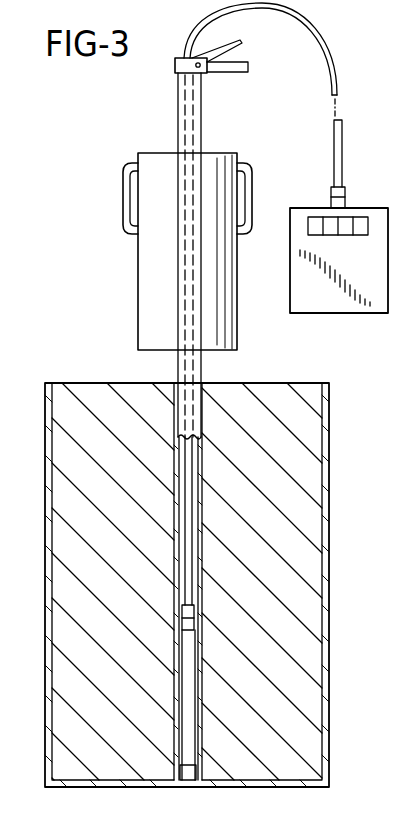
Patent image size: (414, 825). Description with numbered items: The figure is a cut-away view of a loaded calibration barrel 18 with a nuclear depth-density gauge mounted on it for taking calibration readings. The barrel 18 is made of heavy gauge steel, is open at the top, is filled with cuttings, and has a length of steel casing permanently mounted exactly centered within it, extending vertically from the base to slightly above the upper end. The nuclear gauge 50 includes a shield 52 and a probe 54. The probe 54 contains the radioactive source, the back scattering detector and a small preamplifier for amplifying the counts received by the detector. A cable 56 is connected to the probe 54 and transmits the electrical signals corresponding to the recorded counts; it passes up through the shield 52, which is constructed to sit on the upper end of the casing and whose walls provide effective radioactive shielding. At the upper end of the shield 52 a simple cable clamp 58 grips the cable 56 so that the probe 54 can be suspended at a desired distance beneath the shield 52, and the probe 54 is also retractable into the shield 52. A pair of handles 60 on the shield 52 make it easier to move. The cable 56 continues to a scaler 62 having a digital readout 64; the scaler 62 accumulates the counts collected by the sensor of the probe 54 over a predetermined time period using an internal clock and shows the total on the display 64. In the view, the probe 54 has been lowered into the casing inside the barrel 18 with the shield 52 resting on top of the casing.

The calibration barrel 18 is at (328, 572).
The nuclear gauge 50 is at (128, 310).
The shield 52 is at (157, 252).
The probe 54 is at (185, 708).
The cable 56 is at (312, 42).
The cable clamp 58 is at (174, 66).
The handles 60 is at (122, 200).
The scaler 62 is at (384, 222).
The digital readout 64 is at (356, 222).